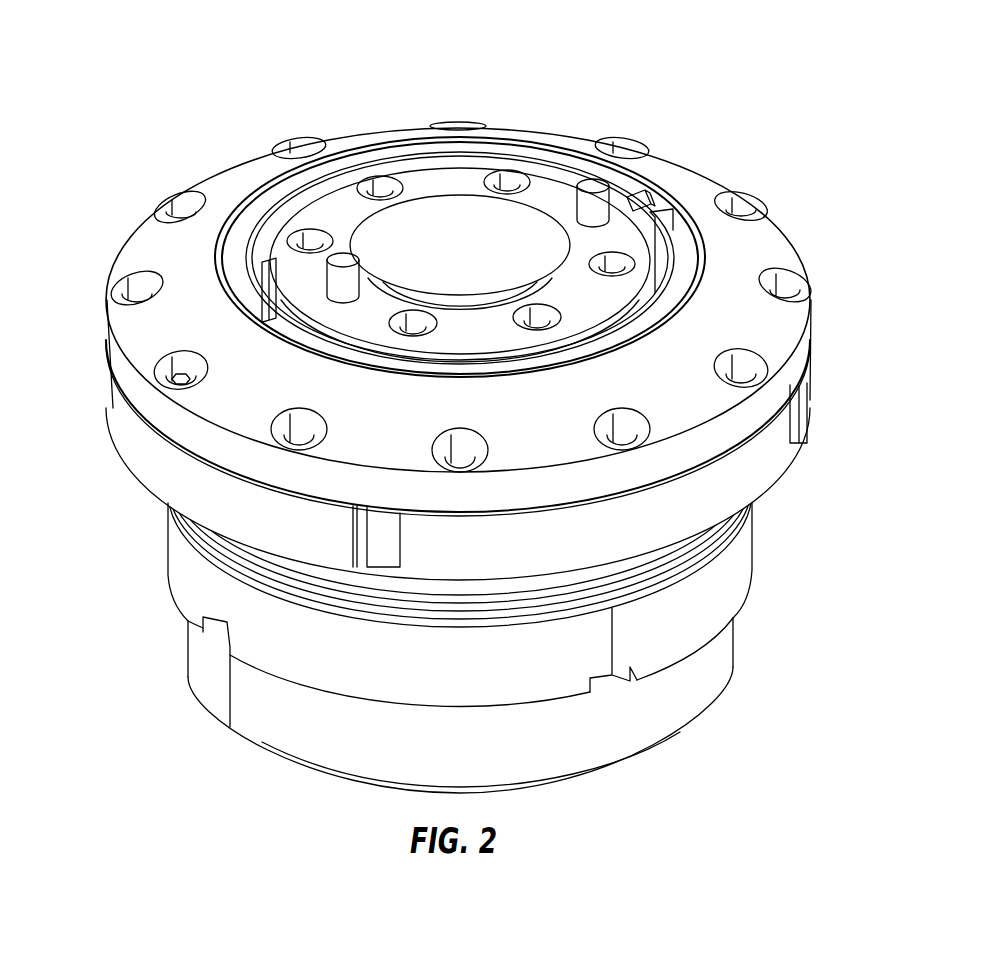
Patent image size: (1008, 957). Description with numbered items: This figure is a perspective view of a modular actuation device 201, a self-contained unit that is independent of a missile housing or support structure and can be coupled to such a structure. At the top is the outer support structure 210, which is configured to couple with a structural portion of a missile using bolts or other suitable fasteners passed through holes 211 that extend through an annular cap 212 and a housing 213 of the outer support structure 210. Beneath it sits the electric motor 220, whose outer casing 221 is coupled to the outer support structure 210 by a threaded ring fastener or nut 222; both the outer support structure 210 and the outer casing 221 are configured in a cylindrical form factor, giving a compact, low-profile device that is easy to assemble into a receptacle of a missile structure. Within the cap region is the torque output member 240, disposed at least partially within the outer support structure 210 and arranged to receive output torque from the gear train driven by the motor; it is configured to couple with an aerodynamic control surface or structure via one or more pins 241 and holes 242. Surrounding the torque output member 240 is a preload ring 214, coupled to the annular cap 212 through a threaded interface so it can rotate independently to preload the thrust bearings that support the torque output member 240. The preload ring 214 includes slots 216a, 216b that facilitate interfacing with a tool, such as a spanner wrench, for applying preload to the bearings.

The modular actuation device 201 is at (187, 74).
The outer support structure 210 is at (108, 458).
The holes 211 is at (790, 274).
The annular cap 212 is at (789, 323).
The housing 213 is at (768, 468).
The preload ring 214 is at (675, 225).
The slot 216a is at (268, 313).
The slot 216b is at (650, 205).
The electric motor 220 is at (255, 768).
The outer casing 221 is at (733, 640).
The threaded ring fastener or nut 222 is at (740, 548).
The torque output member 240 is at (462, 178).
The pins 241 is at (597, 183).
The holes 242 is at (613, 266).